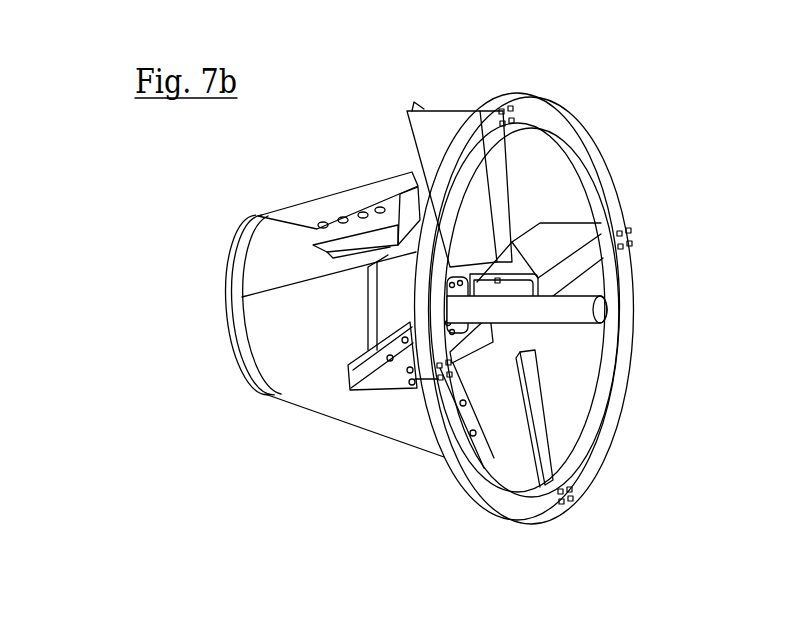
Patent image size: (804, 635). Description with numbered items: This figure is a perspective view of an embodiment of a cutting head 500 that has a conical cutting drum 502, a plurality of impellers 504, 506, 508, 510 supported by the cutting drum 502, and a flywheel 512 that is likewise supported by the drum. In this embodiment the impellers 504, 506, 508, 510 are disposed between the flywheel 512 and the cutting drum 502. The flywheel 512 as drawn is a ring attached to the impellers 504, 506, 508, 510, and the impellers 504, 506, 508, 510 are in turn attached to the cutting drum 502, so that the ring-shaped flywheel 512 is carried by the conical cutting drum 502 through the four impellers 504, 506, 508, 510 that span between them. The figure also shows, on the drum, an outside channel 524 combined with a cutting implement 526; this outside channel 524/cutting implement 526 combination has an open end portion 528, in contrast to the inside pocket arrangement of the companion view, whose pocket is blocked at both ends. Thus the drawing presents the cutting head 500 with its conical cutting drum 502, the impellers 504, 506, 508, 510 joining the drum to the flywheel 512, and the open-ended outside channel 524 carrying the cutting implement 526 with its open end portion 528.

The cutting head 500 is at (186, 262).
The conical cutting drum 502 is at (303, 387).
The impeller 504 is at (438, 128).
The impeller 506 is at (580, 227).
The impeller 508 is at (550, 473).
The impeller 510 is at (393, 432).
The flywheel 512 is at (527, 520).
The outside channel 524 is at (310, 250).
The cutting implement 526 is at (353, 217).
The open end portion 528 is at (368, 290).